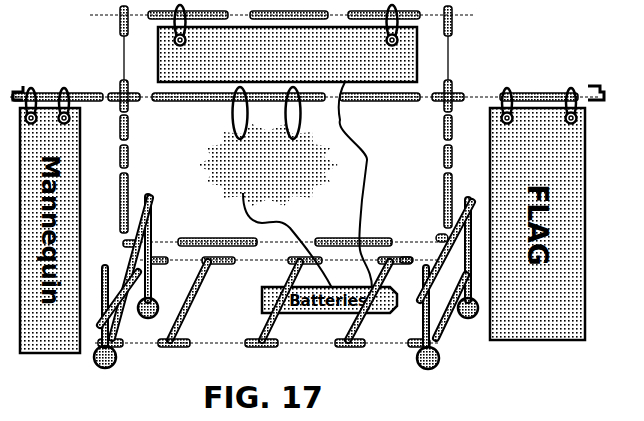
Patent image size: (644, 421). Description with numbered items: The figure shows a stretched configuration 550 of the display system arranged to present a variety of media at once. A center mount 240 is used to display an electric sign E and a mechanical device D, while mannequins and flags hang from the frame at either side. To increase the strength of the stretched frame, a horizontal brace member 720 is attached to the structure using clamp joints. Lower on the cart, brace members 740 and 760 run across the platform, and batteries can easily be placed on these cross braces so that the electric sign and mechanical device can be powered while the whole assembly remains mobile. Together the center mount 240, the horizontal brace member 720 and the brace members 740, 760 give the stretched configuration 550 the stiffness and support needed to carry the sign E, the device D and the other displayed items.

The stretched configuration 550 is at (514, 59).
The electric sign E is at (417, 63).
The mechanical device D is at (200, 172).
The center mount 240 is at (445, 238).
The horizontal brace member 720 is at (170, 243).
The brace member 740 is at (200, 302).
The brace member 760 is at (204, 346).